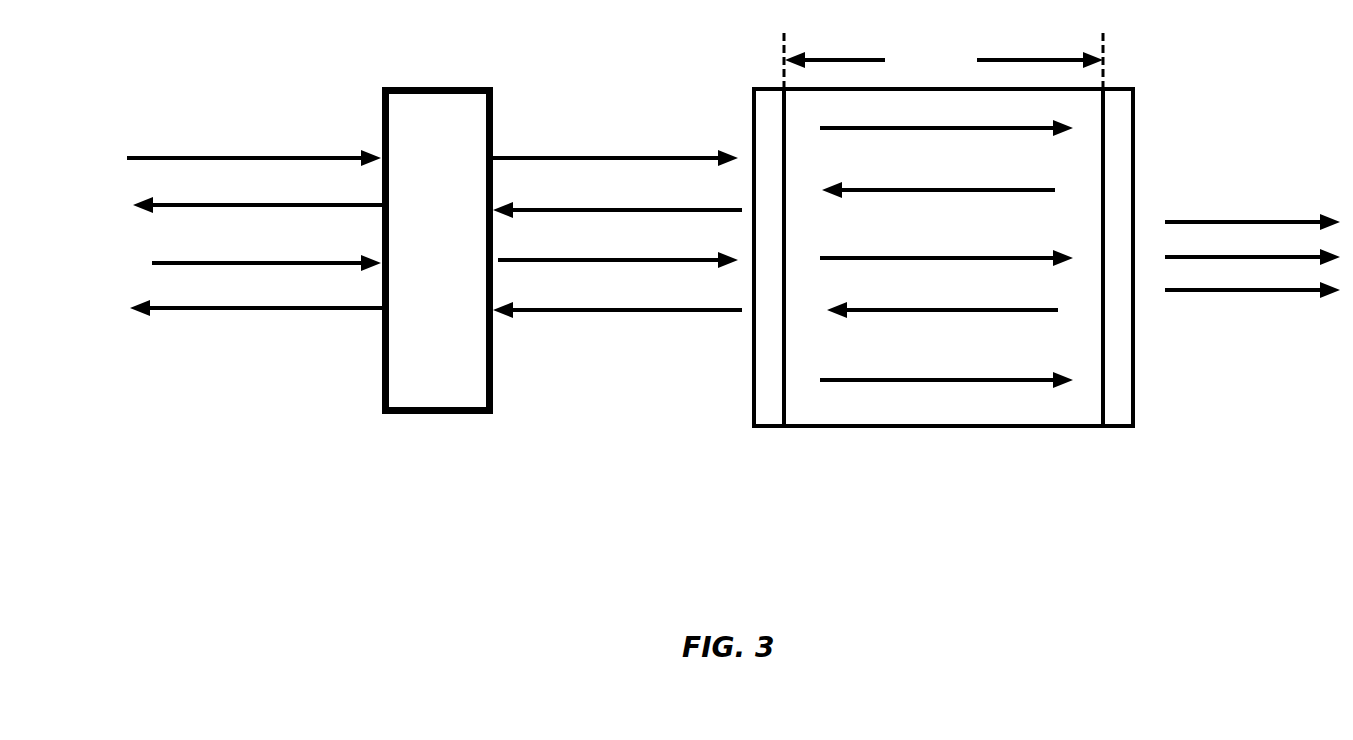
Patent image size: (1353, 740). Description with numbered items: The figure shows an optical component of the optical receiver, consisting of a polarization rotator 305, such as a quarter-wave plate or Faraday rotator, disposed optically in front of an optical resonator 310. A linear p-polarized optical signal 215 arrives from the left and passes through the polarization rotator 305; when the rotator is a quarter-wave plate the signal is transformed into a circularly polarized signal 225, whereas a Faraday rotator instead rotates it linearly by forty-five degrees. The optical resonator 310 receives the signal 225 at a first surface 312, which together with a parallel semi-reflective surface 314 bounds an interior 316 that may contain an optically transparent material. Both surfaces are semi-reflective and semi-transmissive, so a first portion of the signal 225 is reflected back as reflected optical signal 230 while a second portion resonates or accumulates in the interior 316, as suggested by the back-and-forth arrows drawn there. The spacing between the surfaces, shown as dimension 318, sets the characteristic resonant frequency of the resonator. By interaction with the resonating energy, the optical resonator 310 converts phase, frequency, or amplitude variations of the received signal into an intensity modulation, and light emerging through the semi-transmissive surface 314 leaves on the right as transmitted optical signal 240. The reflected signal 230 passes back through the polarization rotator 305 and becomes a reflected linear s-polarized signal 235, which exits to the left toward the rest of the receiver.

The optical signal 215 is at (313, 155).
The circularly polarized signal 225 is at (628, 160).
The reflected optical signal 230 is at (542, 312).
The reflected linear s-polarized signal 235 is at (243, 308).
The transmitted optical signal 240 is at (1202, 297).
The polarization rotator 305 is at (408, 438).
The optical resonator 310 is at (708, 446).
The first surface 312 is at (765, 118).
The semi-reflective surface 314 is at (1113, 123).
The interior 316 is at (940, 440).
The dimension 318 is at (944, 56).